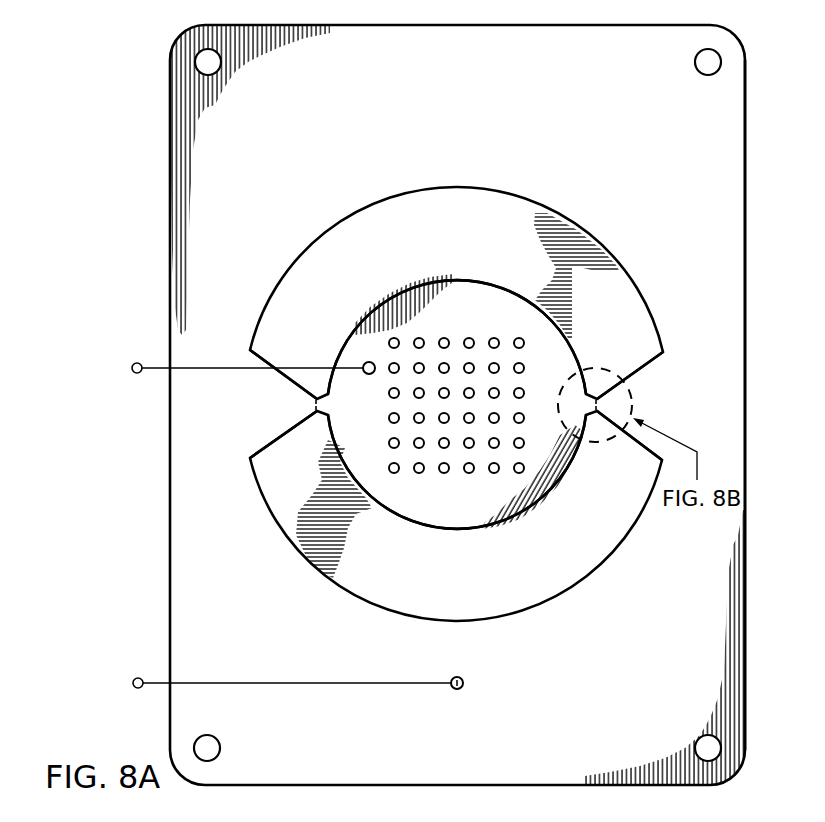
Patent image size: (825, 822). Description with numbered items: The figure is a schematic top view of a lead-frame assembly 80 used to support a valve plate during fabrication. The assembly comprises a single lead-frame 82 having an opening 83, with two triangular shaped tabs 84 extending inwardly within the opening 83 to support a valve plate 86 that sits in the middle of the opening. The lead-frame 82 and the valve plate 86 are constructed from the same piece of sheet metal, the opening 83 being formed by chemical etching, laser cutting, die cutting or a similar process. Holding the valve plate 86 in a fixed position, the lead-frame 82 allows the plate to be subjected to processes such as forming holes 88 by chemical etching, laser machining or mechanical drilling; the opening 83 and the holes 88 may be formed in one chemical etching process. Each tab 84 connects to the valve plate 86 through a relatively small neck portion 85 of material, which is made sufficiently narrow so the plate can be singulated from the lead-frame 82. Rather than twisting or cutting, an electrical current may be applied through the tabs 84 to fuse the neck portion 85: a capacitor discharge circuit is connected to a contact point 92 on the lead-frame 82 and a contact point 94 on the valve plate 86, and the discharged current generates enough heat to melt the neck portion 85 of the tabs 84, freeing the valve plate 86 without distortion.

The lead-frame assembly 80 is at (135, 208).
The lead-frame 82 is at (750, 226).
The opening 83 is at (470, 243).
The tab 84 is at (260, 405).
The neck portion 85 is at (586, 398).
The valve plate 86 is at (578, 358).
The holes 88 is at (517, 469).
The contact point 92 is at (461, 689).
The contact point 94 is at (367, 363).